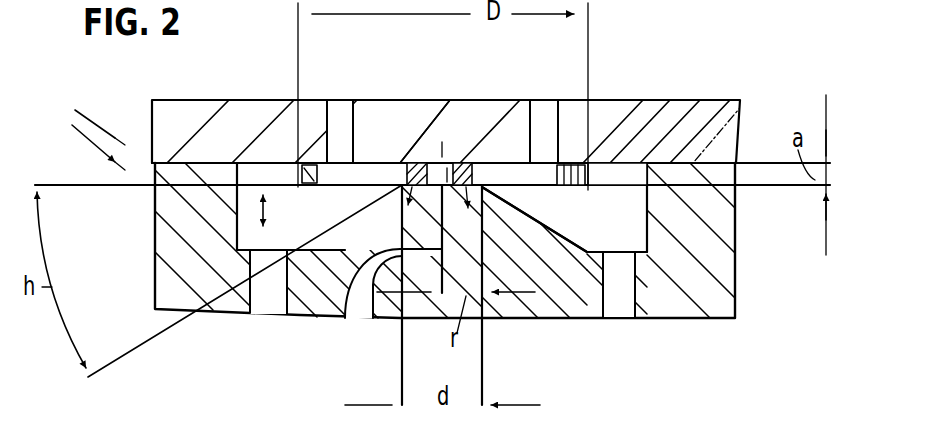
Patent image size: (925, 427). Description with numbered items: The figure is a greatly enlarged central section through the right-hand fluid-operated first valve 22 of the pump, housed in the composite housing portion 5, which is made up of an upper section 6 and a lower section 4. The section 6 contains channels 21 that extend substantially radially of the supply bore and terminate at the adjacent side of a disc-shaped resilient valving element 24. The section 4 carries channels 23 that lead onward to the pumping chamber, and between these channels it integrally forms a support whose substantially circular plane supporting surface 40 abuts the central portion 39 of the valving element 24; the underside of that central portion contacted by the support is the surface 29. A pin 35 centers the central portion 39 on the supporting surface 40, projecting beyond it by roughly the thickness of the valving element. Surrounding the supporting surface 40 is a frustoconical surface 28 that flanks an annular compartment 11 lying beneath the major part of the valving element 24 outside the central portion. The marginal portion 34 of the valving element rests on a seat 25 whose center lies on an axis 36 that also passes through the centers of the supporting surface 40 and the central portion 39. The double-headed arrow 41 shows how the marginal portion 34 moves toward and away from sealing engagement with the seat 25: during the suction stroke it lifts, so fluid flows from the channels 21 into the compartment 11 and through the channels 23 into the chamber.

The section of the composite housing portion 4 is at (713, 285).
The composite housing portion 5 is at (89, 134).
The section of the composite housing portion 6 is at (702, 143).
The annular compartment 11 is at (633, 240).
The channels 21 is at (342, 120).
The first valve 22 is at (370, 145).
The channels 23 is at (262, 305).
The valving element 24 is at (571, 163).
The seat 25 is at (305, 185).
The frustoconical surface 28 is at (557, 219).
The surface at the underside of the central portion 29 is at (503, 252).
The marginal portion 34 is at (592, 165).
The pin 35 is at (451, 160).
The axis 36 is at (372, 322).
The central portion 39 is at (414, 152).
The supporting surface 40 is at (345, 318).
The double-headed arrow 41 is at (262, 202).